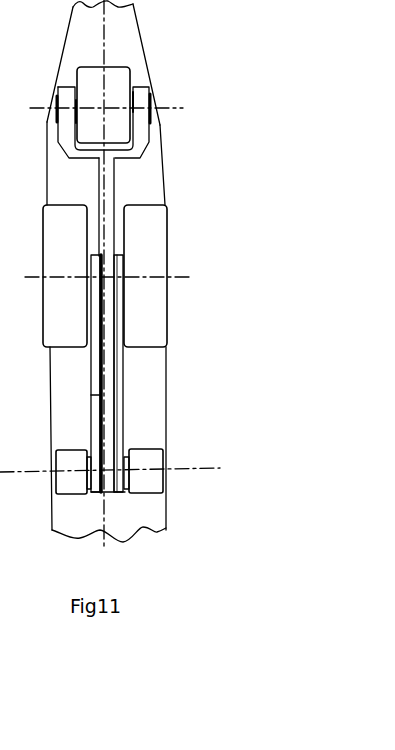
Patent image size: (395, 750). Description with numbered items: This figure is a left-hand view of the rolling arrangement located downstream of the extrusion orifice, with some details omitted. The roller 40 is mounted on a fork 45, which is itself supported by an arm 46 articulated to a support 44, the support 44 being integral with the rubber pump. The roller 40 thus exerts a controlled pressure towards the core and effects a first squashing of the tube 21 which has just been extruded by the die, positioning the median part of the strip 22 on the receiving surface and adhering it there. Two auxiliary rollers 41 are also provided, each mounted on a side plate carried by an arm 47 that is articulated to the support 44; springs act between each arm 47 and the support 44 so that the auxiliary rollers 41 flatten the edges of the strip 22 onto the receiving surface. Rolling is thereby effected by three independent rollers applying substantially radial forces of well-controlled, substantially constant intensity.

The tube 21 is at (125, 31).
The strip 22 is at (148, 168).
The roller 40 is at (119, 123).
The auxiliary rollers 41 is at (150, 253).
The support 44 is at (144, 461).
The fork 45 is at (150, 89).
The arm 46 is at (114, 192).
The arms 47 is at (93, 396).